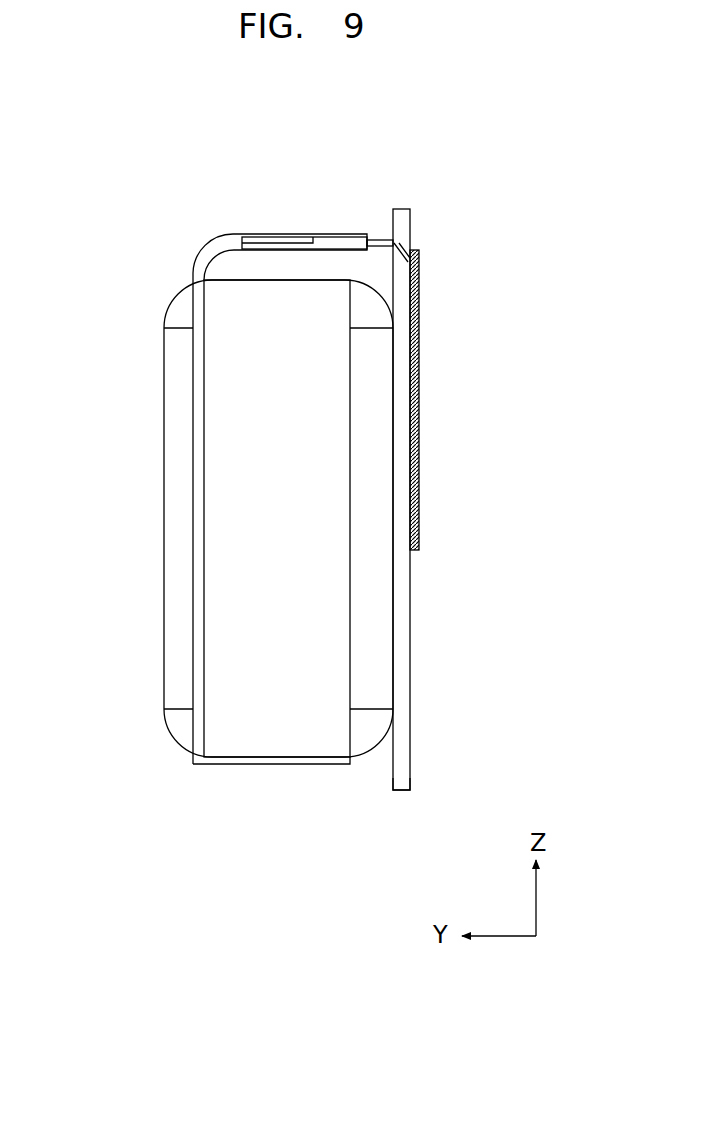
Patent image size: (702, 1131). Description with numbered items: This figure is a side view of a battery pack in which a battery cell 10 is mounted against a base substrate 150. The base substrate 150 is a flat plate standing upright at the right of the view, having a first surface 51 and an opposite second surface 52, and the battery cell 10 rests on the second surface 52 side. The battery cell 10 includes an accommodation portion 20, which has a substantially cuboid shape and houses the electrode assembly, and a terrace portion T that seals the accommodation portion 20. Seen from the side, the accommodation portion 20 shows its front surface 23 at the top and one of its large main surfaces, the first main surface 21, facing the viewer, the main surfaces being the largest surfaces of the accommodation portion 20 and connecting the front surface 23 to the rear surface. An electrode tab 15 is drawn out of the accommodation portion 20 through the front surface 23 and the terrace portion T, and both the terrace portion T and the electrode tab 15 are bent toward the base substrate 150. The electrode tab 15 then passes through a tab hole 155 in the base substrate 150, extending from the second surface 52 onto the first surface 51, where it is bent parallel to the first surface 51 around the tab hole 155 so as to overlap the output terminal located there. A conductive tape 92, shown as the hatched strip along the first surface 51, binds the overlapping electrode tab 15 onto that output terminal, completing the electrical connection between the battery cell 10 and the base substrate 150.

The battery cell 10 is at (233, 496).
The accommodation portion 20 is at (164, 518).
The first main surface 21 is at (393, 613).
The front surface 23 is at (280, 278).
The terrace portion T is at (340, 234).
The electrode tab 15 is at (389, 238).
The base substrate 150 is at (407, 210).
The tab hole 155 is at (413, 243).
The conductive tape 92 is at (420, 490).
The first surface 51 is at (410, 778).
The second surface 52 is at (393, 778).